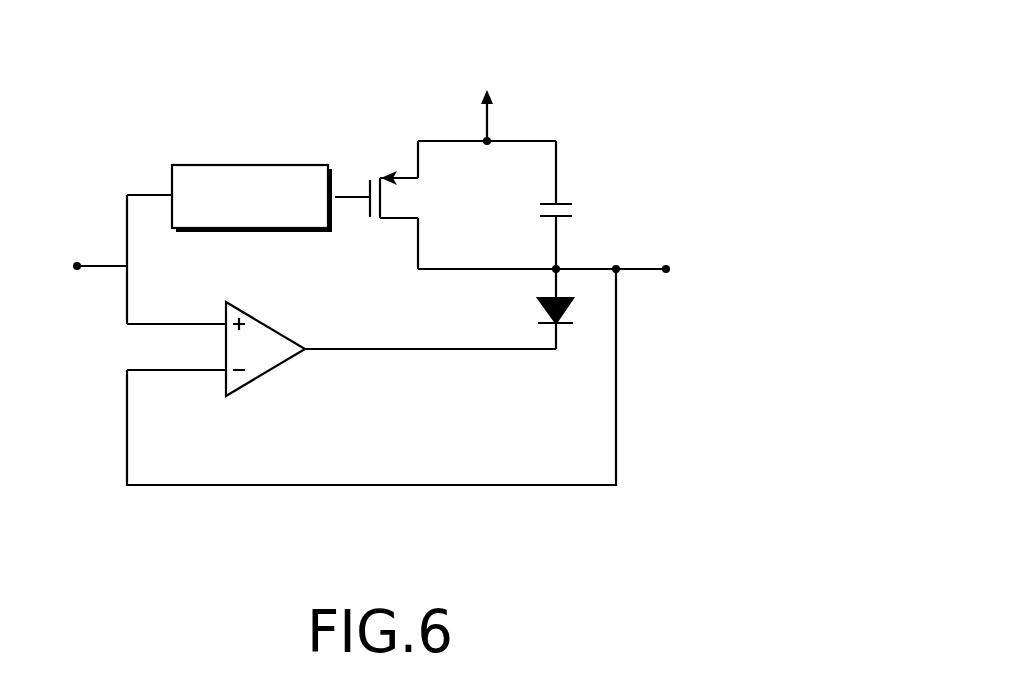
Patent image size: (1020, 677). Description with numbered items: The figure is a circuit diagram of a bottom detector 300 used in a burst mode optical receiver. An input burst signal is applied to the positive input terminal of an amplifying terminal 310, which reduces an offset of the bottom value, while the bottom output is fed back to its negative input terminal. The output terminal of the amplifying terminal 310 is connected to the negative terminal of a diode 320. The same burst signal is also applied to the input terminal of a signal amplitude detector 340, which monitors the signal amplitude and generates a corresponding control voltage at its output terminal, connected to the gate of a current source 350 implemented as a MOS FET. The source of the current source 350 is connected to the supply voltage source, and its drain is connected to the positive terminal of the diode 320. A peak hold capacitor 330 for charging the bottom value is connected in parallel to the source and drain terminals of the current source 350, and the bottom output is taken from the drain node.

The bottom detector 300 is at (657, 128).
The amplifying terminal 310 is at (262, 318).
The diode 320 is at (545, 314).
The peak hold capacitor 330 is at (578, 211).
The signal amplitude detector 340 is at (284, 166).
The current source 350 is at (416, 195).